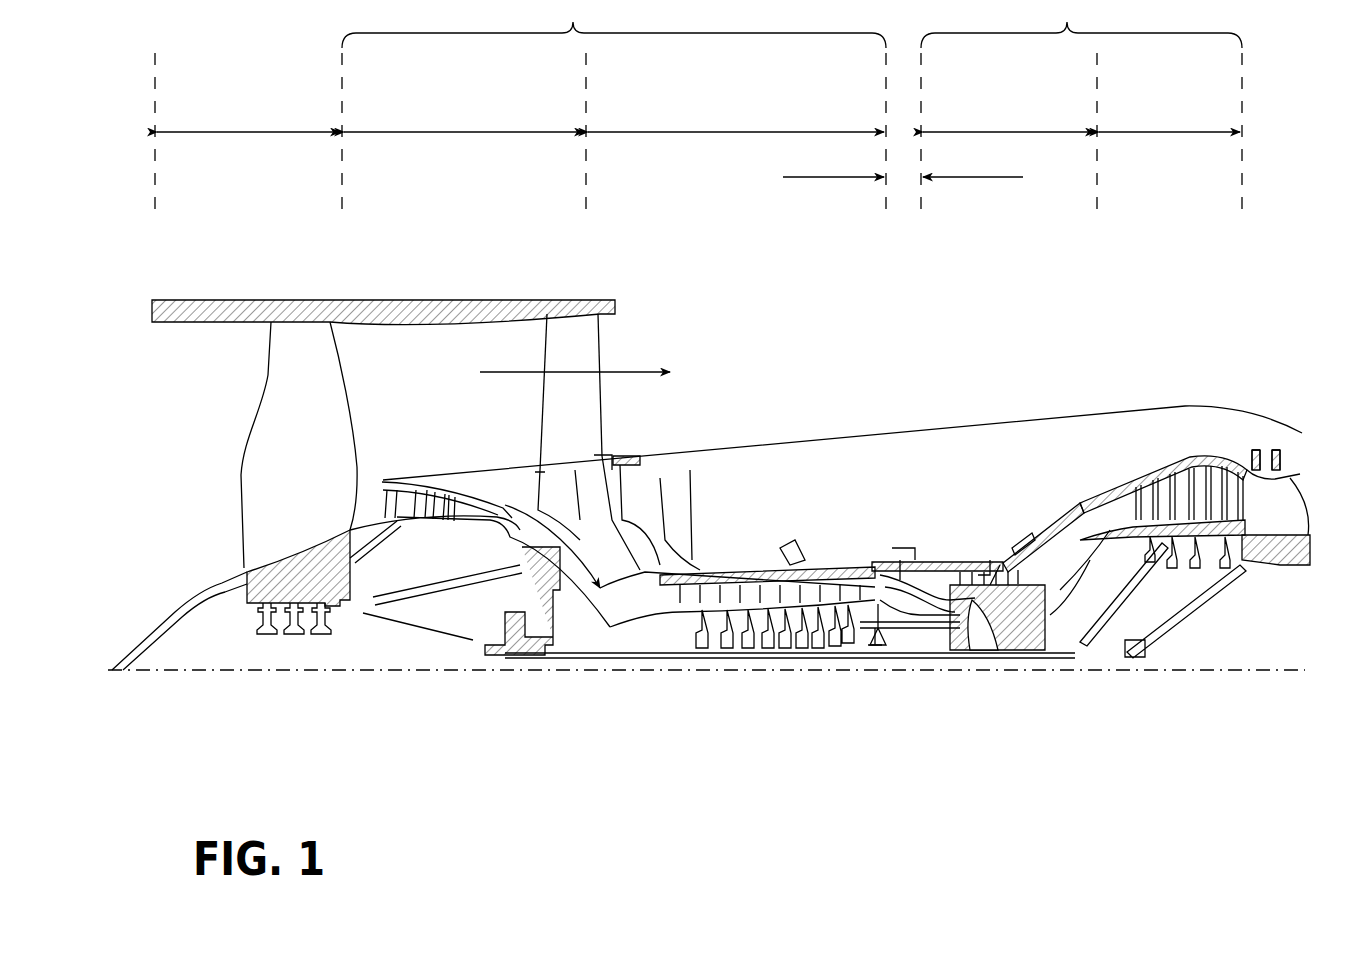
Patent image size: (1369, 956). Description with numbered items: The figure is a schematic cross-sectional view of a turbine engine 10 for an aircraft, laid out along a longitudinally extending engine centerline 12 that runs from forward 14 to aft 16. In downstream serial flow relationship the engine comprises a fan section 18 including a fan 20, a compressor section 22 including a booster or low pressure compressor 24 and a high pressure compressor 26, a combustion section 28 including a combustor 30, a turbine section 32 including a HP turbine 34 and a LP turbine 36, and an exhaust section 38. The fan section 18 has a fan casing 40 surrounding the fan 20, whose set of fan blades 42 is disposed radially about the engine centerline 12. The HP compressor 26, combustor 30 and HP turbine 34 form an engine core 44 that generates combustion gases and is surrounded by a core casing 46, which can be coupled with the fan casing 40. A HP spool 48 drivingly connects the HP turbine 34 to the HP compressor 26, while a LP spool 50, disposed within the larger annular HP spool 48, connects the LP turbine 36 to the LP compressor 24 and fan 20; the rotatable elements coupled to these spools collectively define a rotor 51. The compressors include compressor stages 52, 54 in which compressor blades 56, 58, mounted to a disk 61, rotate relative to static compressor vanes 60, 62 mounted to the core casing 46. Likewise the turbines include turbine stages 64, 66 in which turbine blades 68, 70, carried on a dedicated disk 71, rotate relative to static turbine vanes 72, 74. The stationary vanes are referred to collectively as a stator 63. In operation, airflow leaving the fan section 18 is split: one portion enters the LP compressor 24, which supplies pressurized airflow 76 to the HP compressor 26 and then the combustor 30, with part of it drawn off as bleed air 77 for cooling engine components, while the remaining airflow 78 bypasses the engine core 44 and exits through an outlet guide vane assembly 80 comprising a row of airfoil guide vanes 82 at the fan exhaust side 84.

The turbine engine 10 is at (1257, 215).
The engine centerline 12 is at (274, 672).
The forward 14 is at (118, 435).
The aft 16 is at (1332, 520).
The fan section 18 is at (248, 118).
The fan 20 is at (205, 510).
The compressor section 22 is at (614, 24).
The low pressure compressor 24 is at (464, 118).
The high pressure compressor 26 is at (736, 118).
The combustion section 28 is at (830, 177).
The combustor 30 is at (928, 568).
The turbine section 32 is at (1081, 24).
The HP turbine 34 is at (1009, 118).
The LP turbine 36 is at (1169, 118).
The exhaust section 38 is at (1318, 480).
The fan casing 40 is at (416, 300).
The fan blades 42 is at (328, 380).
The engine core 44 is at (872, 470).
The core casing 46 is at (1080, 503).
The HP spool 48 is at (905, 628).
The LP spool 50 is at (522, 662).
The rotor 51 is at (780, 662).
The compressor stages 52 is at (370, 418).
The compressor stages 54 is at (730, 465).
The compressor blades 56 is at (428, 488).
The compressor blades 58 is at (690, 570).
The static compressor vanes 60 is at (392, 485).
The disk 61 is at (412, 525).
The static compressor vanes 62 is at (673, 550).
The stator 63 is at (1172, 450).
The turbine stages 64 is at (962, 493).
The turbine stages 66 is at (1225, 357).
The turbine blades 68 is at (992, 575).
The turbine blades 70 is at (1222, 465).
The disk 71 is at (985, 618).
The static turbine vanes 72 is at (968, 572).
The static turbine vanes 74 is at (1210, 470).
The pressurized airflow 76 is at (597, 550).
The bleed air 77 is at (772, 550).
The airflow 78 is at (505, 365).
The outlet guide vane assembly 80 is at (612, 427).
The airfoil guide vanes 82 is at (548, 410).
The fan exhaust side 84 is at (645, 330).